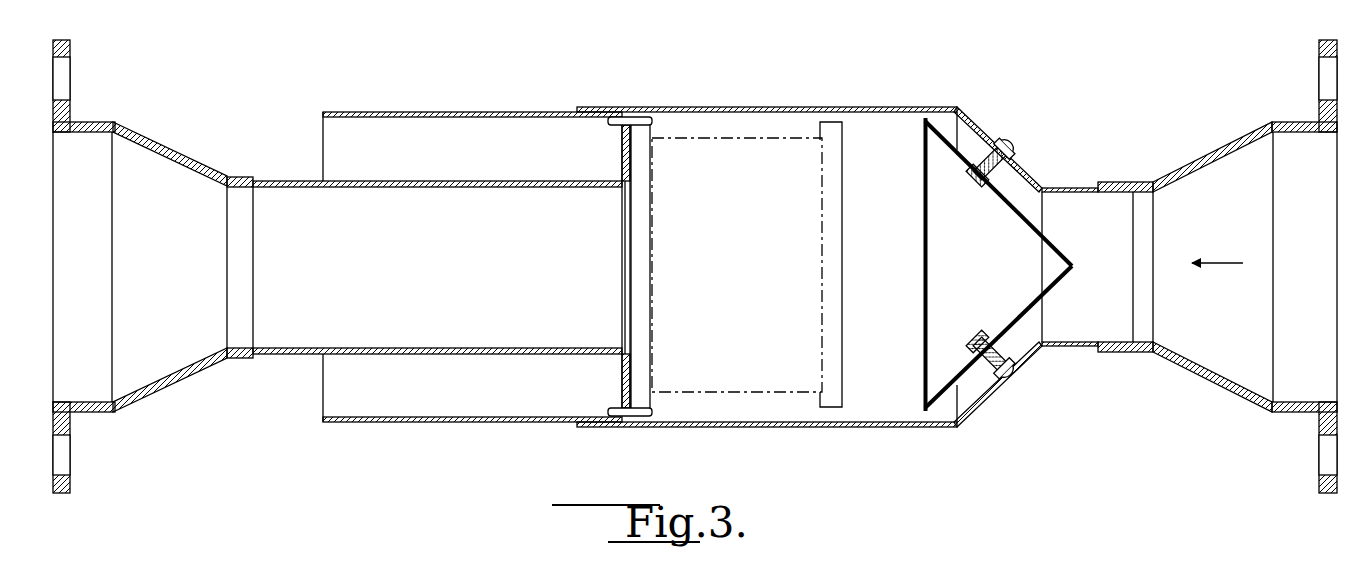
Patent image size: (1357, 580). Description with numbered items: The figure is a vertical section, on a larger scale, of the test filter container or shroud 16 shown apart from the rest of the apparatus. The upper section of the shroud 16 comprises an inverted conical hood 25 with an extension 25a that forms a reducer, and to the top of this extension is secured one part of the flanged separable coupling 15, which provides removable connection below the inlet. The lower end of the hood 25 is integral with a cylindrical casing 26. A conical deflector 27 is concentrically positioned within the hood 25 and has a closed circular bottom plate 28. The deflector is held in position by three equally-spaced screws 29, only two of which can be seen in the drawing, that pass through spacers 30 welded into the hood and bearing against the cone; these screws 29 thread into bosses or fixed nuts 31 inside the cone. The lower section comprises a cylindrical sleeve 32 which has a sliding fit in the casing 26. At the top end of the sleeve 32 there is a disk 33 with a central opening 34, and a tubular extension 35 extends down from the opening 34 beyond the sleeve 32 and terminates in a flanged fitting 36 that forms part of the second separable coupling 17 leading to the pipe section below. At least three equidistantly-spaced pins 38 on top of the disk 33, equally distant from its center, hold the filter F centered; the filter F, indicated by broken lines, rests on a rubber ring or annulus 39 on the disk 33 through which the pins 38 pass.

The separable coupling 15 is at (1293, 413).
The test filter holder or shroud 16 is at (873, 104).
The second separable coupling 17 is at (72, 455).
The inverted conical hood 25 is at (985, 402).
The extension 25a is at (1068, 347).
The cylindrical casing 26 is at (742, 427).
The conical deflector 27 is at (942, 398).
The closed circular bottom plate 28 is at (923, 370).
The screws 29 is at (1018, 148).
The spacers 30 is at (986, 157).
The bosses or fixed nuts 31 is at (985, 183).
The cylindrical sleeve 32 is at (483, 420).
The disk 33 is at (620, 363).
The central opening 34 is at (630, 262).
The tubular extension 35 is at (402, 352).
The flanged fitting 36 is at (160, 392).
The pins 38 is at (642, 116).
The rubber ring or annulus 39 is at (633, 390).
The filter F is at (782, 393).